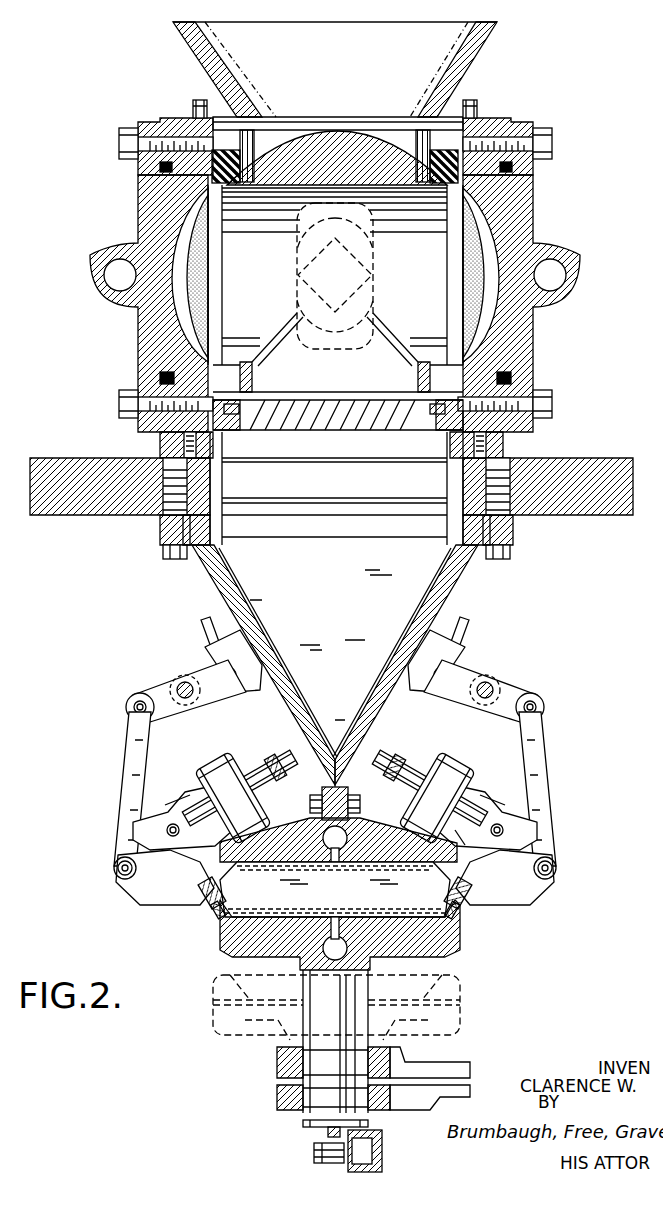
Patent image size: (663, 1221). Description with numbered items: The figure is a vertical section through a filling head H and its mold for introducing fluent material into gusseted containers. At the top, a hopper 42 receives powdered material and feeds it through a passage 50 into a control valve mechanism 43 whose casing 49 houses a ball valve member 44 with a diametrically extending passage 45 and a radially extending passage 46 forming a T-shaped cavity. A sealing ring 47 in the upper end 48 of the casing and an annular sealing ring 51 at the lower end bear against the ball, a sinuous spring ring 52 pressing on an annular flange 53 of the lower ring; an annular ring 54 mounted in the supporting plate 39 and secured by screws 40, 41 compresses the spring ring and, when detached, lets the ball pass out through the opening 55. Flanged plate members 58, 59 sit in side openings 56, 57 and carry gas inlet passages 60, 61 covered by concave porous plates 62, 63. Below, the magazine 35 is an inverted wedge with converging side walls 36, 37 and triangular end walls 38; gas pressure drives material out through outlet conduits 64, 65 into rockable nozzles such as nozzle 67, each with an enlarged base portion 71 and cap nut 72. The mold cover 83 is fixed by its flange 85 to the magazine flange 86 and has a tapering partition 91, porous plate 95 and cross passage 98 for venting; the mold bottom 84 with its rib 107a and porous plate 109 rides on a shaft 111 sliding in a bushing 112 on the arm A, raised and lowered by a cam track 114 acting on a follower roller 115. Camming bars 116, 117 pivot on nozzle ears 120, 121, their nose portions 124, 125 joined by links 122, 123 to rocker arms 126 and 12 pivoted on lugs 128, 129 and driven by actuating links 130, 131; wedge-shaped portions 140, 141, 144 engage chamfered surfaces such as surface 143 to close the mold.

The lever 12 is at (518, 695).
The magazine 35 is at (356, 650).
The side wall 36 is at (262, 620).
The side wall 37 is at (425, 618).
The end wall 38 is at (350, 666).
The supporting plate 39 is at (598, 460).
The screw 40 is at (168, 560).
The screw 41 is at (512, 548).
The hopper 42 is at (470, 60).
The control valve mechanism 43 is at (334, 303).
The ball valve member 44 is at (343, 132).
The diametrically extending passage 45 is at (418, 271).
The radially extending passage 46 is at (350, 386).
The sealing ring 47 is at (250, 160).
The upper end of valve casing 48 is at (470, 150).
The valve casing 49 is at (500, 377).
The passage 50 is at (403, 132).
The annular sealing ring 51 is at (420, 386).
The spring ring 52 is at (432, 410).
The annular flange 53 is at (162, 378).
The annular ring 54 is at (170, 447).
The opening 55 is at (235, 420).
The opening 56 is at (140, 181).
The opening 57 is at (540, 186).
The flanged plate member 58 is at (165, 221).
The flanged plate member 59 is at (520, 228).
The gas inlet passage 60 is at (108, 275).
The gas inlet passage 61 is at (566, 275).
The porous plate 62 is at (186, 275).
The porous plate 63 is at (490, 275).
The outlet conduit 64 is at (290, 765).
The outlet conduit 65 is at (392, 768).
The nozzle 67 is at (468, 840).
The base portion 71 is at (195, 800).
The cap nut 72 is at (220, 770).
The mold cover 83 is at (338, 863).
The mold bottom portion 84 is at (222, 945).
The flange 85 is at (312, 804).
The flange 86 is at (359, 804).
The partition 91 is at (300, 901).
The porous metal plate 95 is at (420, 868).
The cross passage 98 is at (333, 850).
The rib 107a is at (340, 898).
The porous plate 109 is at (398, 898).
The shaft 111 is at (312, 1060).
The bushing 112 is at (290, 1094).
The cam track 114 is at (382, 1158).
The follower roller 115 is at (380, 1137).
The camming bar 116 is at (144, 885).
The camming bar 117 is at (527, 887).
The ear 120 is at (140, 820).
The ear 121 is at (540, 833).
The link 122 is at (130, 750).
The link 123 is at (548, 757).
The nose portion 124 is at (114, 866).
The nose portion 125 is at (557, 869).
The rocker arm 126 is at (155, 684).
The lug 128 is at (212, 655).
The lug 129 is at (478, 660).
The actuating link 130 is at (206, 622).
The actuating link 131 is at (470, 624).
The wedge-shaped portion 140 is at (205, 900).
The wedge-shaped portion 141 is at (462, 905).
The chamfered surface 143 is at (458, 920).
The roller 144 is at (214, 916).
The arm A is at (462, 1065).
The filling head H is at (556, 212).